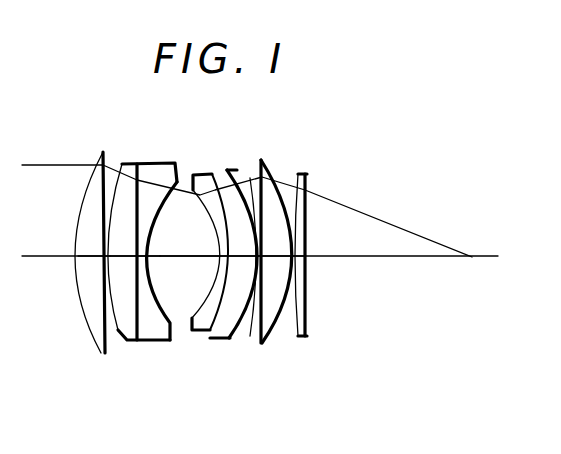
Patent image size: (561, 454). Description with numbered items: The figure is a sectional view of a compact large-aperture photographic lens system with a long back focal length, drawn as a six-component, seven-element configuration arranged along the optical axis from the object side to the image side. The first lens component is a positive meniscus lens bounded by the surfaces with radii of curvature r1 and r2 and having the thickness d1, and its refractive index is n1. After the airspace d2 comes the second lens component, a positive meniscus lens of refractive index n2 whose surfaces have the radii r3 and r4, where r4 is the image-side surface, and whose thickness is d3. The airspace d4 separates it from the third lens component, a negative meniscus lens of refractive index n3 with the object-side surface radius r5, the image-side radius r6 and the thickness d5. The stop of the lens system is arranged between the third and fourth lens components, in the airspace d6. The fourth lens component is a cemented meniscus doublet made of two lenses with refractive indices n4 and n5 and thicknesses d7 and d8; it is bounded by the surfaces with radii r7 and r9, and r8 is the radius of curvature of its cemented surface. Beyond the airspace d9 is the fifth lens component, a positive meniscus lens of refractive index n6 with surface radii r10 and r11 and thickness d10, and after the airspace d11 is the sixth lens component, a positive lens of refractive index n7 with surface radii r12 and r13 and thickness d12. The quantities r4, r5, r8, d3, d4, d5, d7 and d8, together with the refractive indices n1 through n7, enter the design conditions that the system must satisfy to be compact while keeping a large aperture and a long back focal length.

The refractive index of the first lens n1 is at (68, 254).
The refractive index of the second lens n2 is at (142, 255).
The refractive index of the third lens n3 is at (159, 261).
The refractive index of the fourth lens n4 is at (198, 250).
The refractive index of the fifth lens n5 is at (235, 255).
The refractive index of the sixth lens n6 is at (273, 255).
The refractive index of the seventh lens n7 is at (327, 261).
The thickness of the first lens d1 is at (79, 247).
The airspace between the first and second lens components d2 is at (100, 238).
The thickness of the second lens component d3 is at (116, 252).
The airspace between the second and third lens components d4 is at (146, 236).
The thickness of the third lens component d5 is at (150, 246).
The airspace between the third and fourth lens components d6 is at (160, 260).
The thickness of the first lens of the fourth lens component d7 is at (216, 241).
The thickness of the second lens of the fourth lens component d8 is at (239, 252).
The airspace between the fourth and fifth lens components d9 is at (252, 258).
The thickness of the fifth lens component d10 is at (269, 258).
The airspace between the fifth and sixth lens components d11 is at (295, 250).
The thickness of the sixth lens component d12 is at (305, 270).
The radius of curvature of the first lens surface r1 is at (99, 351).
The radius of curvature of the second lens surface r2 is at (105, 352).
The radius of curvature of the third lens surface r3 is at (118, 338).
The radius of curvature of the image-side surface of the second lens component r4 is at (137, 312).
The radius of curvature of the object-side surface of the third lens component r5 is at (155, 340).
The radius of curvature of the sixth lens surface r6 is at (180, 322).
The radius of curvature of the seventh lens surface r7 is at (193, 332).
The radius of curvature of the cemented surface of the fourth lens component r8 is at (212, 340).
The radius of curvature of the ninth lens surface r9 is at (242, 339).
The radius of curvature of the tenth lens surface r10 is at (248, 342).
The radius of curvature of the eleventh lens surface r11 is at (264, 345).
The radius of curvature of the twelfth lens surface r12 is at (299, 338).
The radius of curvature of the thirteenth lens surface r13 is at (307, 328).